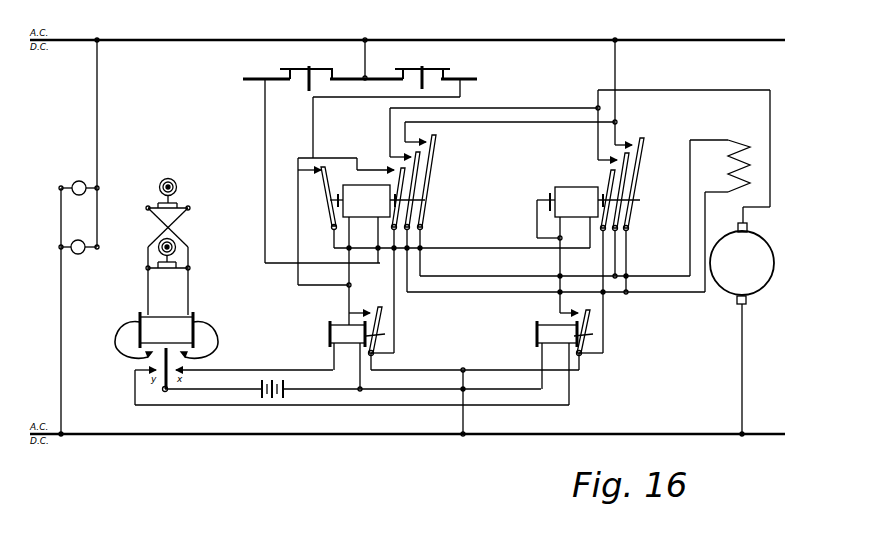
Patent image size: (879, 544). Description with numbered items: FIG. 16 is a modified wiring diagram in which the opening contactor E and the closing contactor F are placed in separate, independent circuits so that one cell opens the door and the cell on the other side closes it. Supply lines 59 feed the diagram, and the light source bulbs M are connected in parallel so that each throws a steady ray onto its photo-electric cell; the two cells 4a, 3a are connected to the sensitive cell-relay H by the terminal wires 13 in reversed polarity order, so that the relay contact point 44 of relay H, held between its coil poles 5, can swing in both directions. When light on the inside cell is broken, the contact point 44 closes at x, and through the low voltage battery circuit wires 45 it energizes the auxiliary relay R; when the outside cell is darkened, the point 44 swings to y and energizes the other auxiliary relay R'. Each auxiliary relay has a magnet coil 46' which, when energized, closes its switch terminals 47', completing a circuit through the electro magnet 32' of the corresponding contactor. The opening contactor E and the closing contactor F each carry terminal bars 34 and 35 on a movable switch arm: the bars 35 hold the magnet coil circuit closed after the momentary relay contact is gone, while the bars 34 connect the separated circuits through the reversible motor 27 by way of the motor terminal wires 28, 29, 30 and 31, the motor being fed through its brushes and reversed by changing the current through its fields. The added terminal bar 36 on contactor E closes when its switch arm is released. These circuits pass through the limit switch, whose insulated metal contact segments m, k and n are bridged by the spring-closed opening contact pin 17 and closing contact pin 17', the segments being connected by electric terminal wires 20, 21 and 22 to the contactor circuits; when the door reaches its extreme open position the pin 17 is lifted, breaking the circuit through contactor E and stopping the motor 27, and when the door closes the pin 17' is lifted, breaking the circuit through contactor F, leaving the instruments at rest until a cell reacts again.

The supply conductor 59 is at (61, 300).
The light source bulb M is at (79, 209).
The generator 4a is at (166, 191).
The generator 3a is at (176, 250).
The conductors 13 is at (165, 291).
The sensitive cell-relay instrument H is at (166, 330).
The relay coil poles 5 is at (166, 340).
The relay contact point 44 is at (147, 370).
The circuit wires 45 is at (352, 381).
The sensitive auxiliary relay instrument R is at (347, 356).
The auxiliary relay R' is at (557, 363).
The magnet coil 46' is at (345, 304).
The switch terminals 47' is at (375, 330).
The metal contact segment m is at (268, 77).
The metal contact segment k is at (338, 78).
The metal contact segment n is at (458, 78).
The opening contact pin 17 is at (306, 71).
The closing contact pin 17' is at (422, 70).
The electric terminal wire 20 is at (374, 60).
The electric terminal wire 21 is at (318, 171).
The electric terminal wire 22 is at (386, 119).
The opening contactor E is at (377, 201).
The electro magnet 32' is at (363, 251).
The added terminal bar 36 is at (333, 207).
The terminal bar 35 is at (398, 176).
The terminal bar 34 is at (420, 190).
The closing contactor F is at (588, 212).
The motor terminal wire 28 is at (715, 208).
The motor terminal wire 29 is at (713, 242).
The motor terminal wire 30 is at (740, 221).
The electric motor 27 is at (763, 284).
The motor terminal wire 31 is at (738, 365).